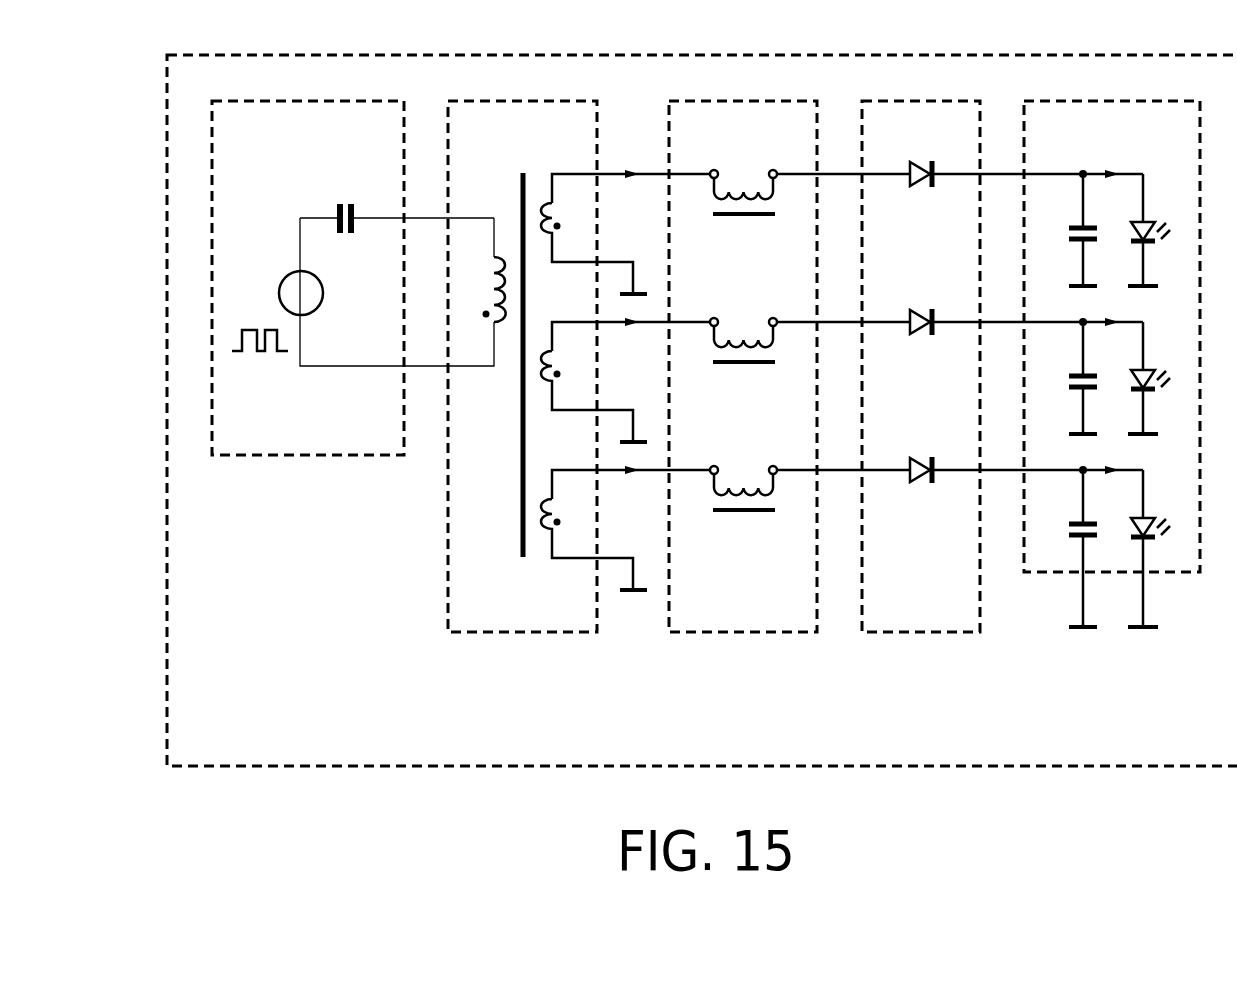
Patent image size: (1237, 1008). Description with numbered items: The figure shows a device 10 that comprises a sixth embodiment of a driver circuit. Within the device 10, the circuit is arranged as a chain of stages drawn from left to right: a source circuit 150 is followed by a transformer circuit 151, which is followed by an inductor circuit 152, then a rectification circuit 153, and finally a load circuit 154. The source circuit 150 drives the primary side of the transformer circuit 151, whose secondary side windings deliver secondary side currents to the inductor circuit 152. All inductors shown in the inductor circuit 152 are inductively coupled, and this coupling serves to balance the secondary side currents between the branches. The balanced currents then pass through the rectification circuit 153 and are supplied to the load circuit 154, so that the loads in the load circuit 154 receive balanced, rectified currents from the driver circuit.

The device 10 is at (1131, 766).
The source circuit 150 is at (300, 455).
The transformer circuit 151 is at (525, 632).
The inductor circuit 152 is at (747, 632).
The rectification circuit 153 is at (923, 632).
The load circuit 154 is at (1197, 572).